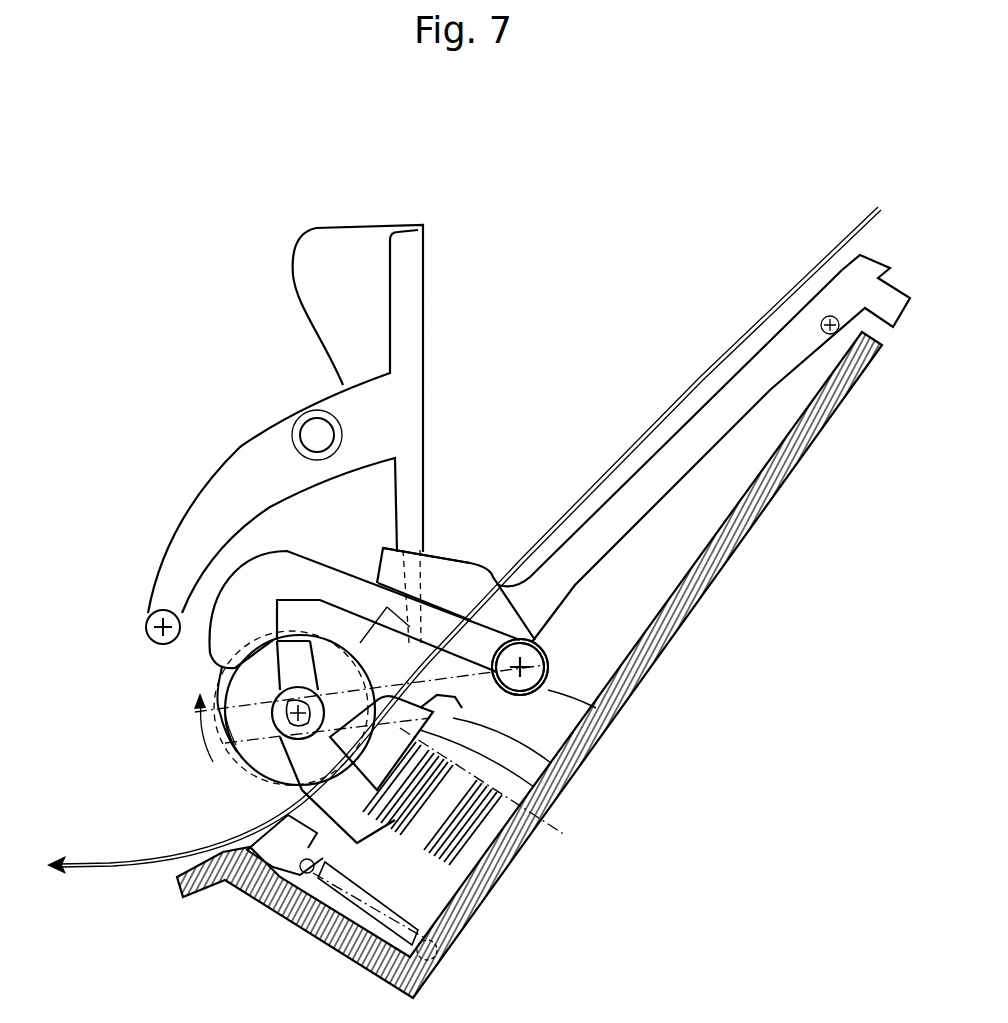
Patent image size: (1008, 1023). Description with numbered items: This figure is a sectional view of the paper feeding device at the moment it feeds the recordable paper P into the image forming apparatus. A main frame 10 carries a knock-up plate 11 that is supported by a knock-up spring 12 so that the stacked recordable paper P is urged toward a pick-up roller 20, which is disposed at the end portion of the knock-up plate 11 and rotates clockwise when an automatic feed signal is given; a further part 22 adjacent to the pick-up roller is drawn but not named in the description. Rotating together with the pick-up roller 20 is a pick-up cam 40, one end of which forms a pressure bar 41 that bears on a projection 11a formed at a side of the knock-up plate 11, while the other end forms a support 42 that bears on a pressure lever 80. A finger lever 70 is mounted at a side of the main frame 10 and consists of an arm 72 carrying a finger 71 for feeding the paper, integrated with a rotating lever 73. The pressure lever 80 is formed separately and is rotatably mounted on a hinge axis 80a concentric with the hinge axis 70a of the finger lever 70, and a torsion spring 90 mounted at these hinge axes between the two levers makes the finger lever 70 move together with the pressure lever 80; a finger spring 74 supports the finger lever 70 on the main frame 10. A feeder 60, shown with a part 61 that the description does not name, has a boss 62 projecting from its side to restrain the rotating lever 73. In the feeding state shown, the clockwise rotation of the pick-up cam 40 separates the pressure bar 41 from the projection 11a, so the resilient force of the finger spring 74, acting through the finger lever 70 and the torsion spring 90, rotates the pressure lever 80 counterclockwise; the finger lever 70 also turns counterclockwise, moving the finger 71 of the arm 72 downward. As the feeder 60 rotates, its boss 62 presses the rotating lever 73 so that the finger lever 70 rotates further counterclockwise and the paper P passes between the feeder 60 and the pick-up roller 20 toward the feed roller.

The paper P is at (797, 286).
The main frame 10 is at (736, 530).
The knock-up plate 11 is at (735, 400).
The projection 11a is at (532, 786).
The knock-up spring 12 is at (472, 862).
The pick-up roller 20 is at (272, 713).
The wheel flange 22 is at (233, 750).
The pick-up cam 40 is at (280, 774).
The pressure bar 41 is at (437, 950).
The support 42 is at (204, 693).
The feeder 60 is at (250, 462).
The lever pivot pin 61 is at (146, 628).
The boss for restraining the finger 62 is at (315, 430).
The finger lever 70 is at (494, 545).
The hinge axis of the finger lever 70a is at (528, 676).
The hinge axis of the pressure lever 80a is at (630, 687).
The finger 71 is at (282, 880).
The arm 72 is at (540, 748).
The rotating lever 73 is at (441, 562).
The finger spring 74 is at (356, 905).
The pressure lever 80 is at (226, 650).
The torsion spring 90 is at (546, 655).